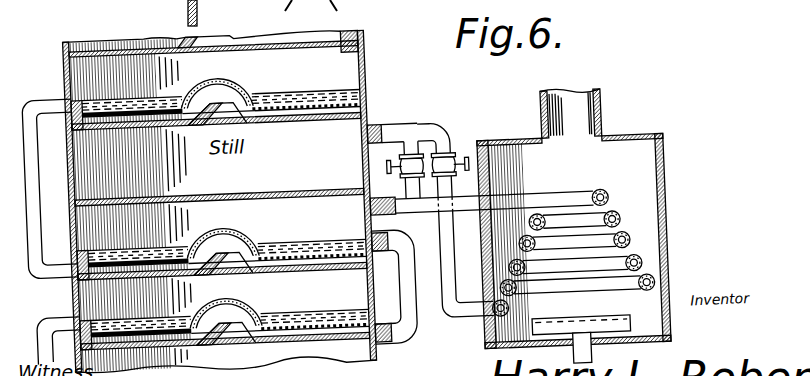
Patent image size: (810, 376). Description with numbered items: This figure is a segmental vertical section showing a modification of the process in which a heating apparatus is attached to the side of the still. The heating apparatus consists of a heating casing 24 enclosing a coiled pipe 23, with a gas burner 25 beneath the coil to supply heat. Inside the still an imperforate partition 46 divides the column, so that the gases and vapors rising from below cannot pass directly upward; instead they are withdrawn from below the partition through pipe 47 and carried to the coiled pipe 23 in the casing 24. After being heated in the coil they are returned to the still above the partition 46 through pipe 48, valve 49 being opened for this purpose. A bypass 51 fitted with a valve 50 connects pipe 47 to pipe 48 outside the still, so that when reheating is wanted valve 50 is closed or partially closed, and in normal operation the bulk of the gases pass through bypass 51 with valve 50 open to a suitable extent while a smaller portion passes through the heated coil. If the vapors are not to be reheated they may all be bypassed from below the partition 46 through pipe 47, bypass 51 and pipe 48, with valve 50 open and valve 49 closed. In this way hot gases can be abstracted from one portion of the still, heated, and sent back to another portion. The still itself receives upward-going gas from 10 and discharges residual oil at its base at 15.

The gas inlet 10 is at (128, 0).
The residual oil outlet 15 is at (197, 12).
The coiled pipe 23 is at (600, 205).
The heating casing 24 is at (665, 189).
The gas burner 25 is at (624, 334).
The imperforate partition 46 is at (173, 196).
The pipe 47 is at (412, 219).
The pipe 48 is at (394, 133).
The valve 49 is at (457, 166).
The valve 50 is at (440, 150).
The bypass 51 is at (412, 156).